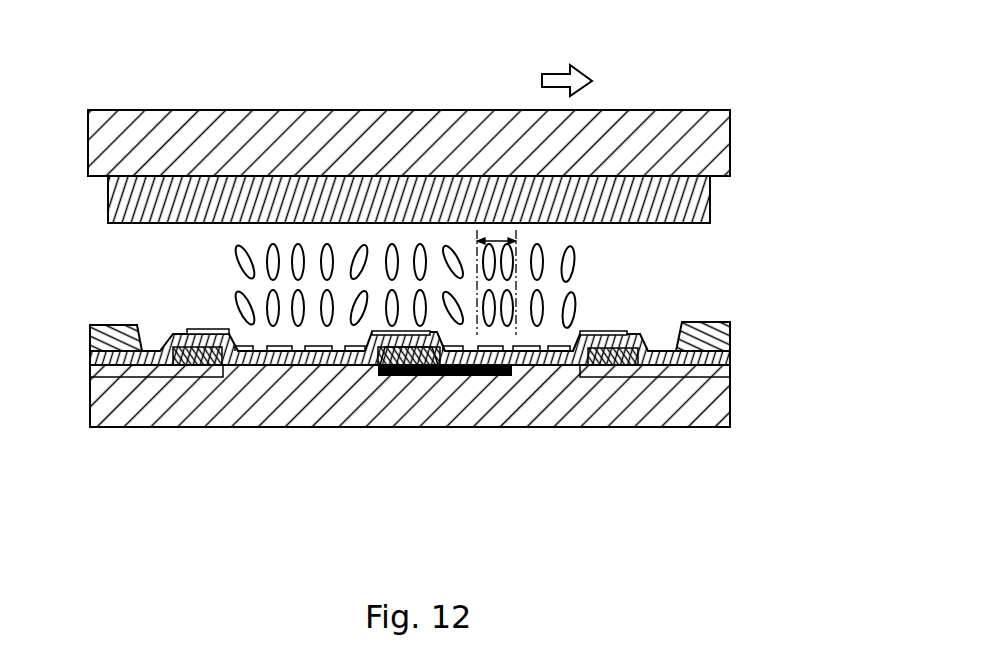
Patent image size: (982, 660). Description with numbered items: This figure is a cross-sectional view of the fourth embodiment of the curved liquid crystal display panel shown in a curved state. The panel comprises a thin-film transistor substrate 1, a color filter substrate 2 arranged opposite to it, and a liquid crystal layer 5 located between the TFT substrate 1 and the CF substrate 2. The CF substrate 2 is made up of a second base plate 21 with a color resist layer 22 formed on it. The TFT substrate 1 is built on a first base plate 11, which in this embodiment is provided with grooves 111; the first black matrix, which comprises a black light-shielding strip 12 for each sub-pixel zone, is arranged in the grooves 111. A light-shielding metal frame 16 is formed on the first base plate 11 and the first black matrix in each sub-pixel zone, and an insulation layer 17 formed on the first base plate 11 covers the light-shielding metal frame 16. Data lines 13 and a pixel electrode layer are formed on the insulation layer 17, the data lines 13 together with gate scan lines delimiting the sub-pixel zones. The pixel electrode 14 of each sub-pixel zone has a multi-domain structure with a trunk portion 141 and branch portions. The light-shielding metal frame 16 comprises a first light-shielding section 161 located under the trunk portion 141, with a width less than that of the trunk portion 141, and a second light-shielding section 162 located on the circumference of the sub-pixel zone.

The thin-film transistor substrate 1 is at (455, 428).
The color filter substrate 2 is at (449, 135).
The liquid crystal layer 5 is at (577, 308).
The first base plate 11 is at (611, 372).
The grooves 111 is at (497, 372).
The black light-shielding strip 12 is at (462, 357).
The data lines 13 is at (107, 338).
The pixel electrode 14 is at (556, 352).
The trunk portion 141 is at (408, 360).
The light-shielding metal frame 16 is at (305, 428).
The first light-shielding section 161 is at (387, 345).
The second light-shielding section 162 is at (198, 366).
The insulation layer 17 is at (669, 350).
The second base plate 21 is at (254, 144).
The color resist layer 22 is at (352, 188).